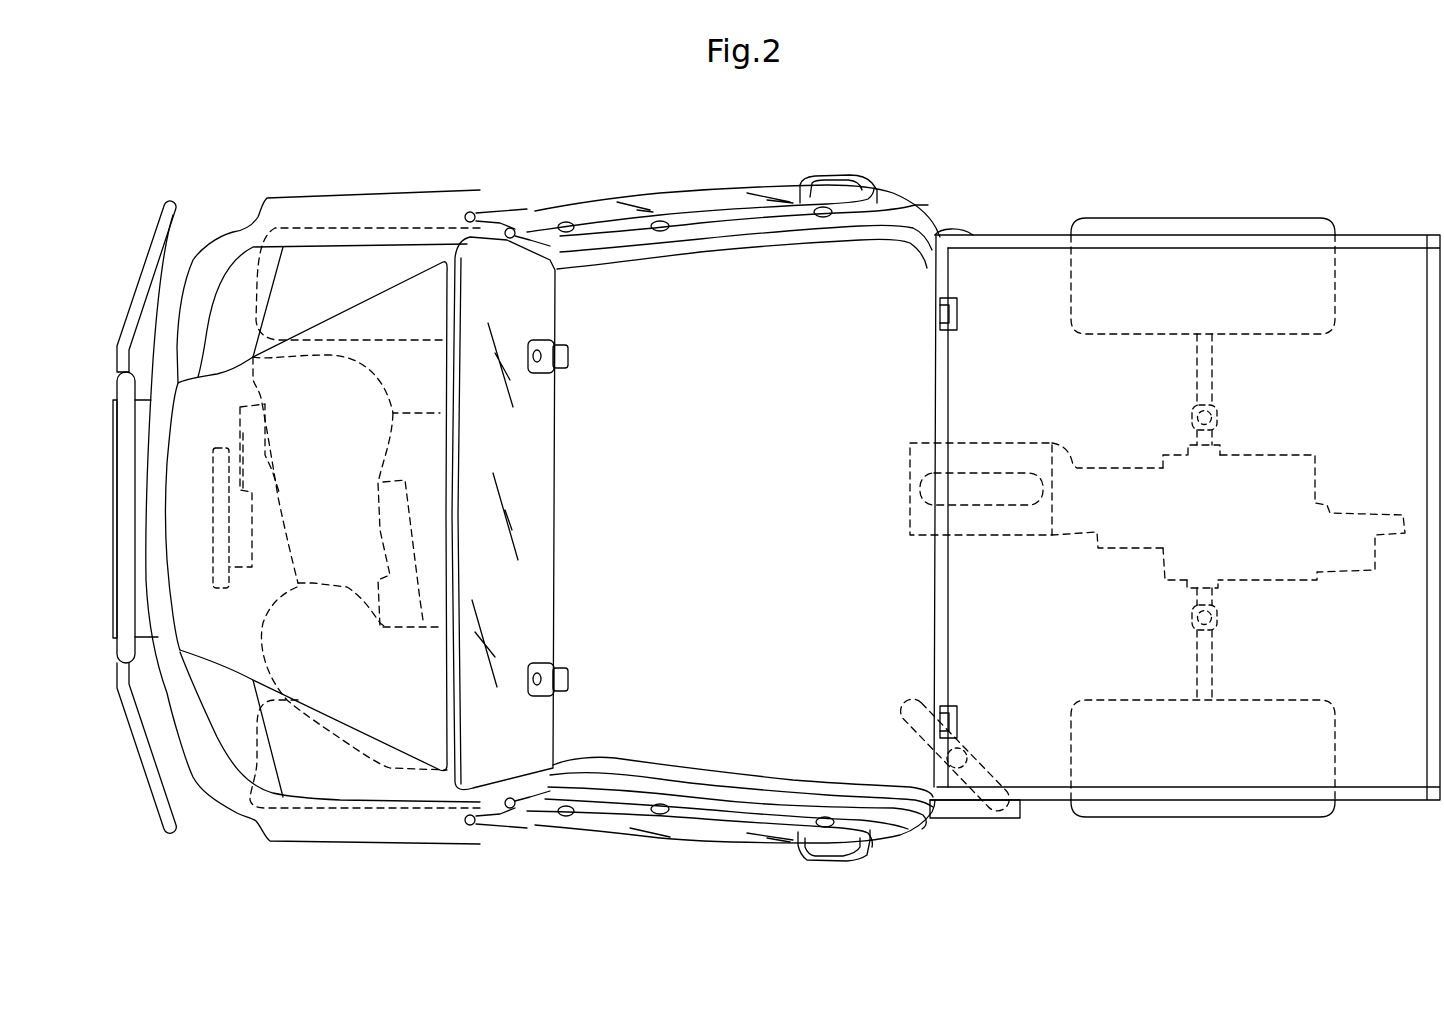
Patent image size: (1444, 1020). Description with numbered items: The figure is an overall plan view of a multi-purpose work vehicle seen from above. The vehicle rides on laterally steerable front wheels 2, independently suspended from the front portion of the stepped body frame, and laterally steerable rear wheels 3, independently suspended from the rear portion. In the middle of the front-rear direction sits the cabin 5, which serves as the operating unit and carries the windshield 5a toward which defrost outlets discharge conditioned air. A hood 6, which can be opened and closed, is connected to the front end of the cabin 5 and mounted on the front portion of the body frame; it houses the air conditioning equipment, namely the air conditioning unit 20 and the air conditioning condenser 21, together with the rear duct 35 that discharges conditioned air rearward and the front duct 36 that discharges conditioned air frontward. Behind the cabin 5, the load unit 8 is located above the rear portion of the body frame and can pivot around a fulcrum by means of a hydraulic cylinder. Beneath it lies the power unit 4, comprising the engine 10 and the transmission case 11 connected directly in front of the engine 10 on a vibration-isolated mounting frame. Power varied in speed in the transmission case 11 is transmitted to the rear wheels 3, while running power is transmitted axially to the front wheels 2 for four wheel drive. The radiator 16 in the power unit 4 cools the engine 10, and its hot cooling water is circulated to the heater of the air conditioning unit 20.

The front wheels 2 is at (253, 280).
The rear wheels 3 is at (1205, 218).
The power unit 4 is at (1077, 573).
The cabin 5 is at (627, 193).
The windshield 5a is at (467, 663).
The hood 6 is at (378, 250).
The load unit 8 is at (1377, 238).
The engine 10 is at (1000, 440).
The transmission case 11 is at (1283, 453).
The radiator 16 is at (980, 760).
The air conditioning unit 20 is at (292, 567).
The air conditioning condenser 21 is at (215, 503).
The rear duct 35 is at (423, 413).
The front duct 36 is at (240, 437).